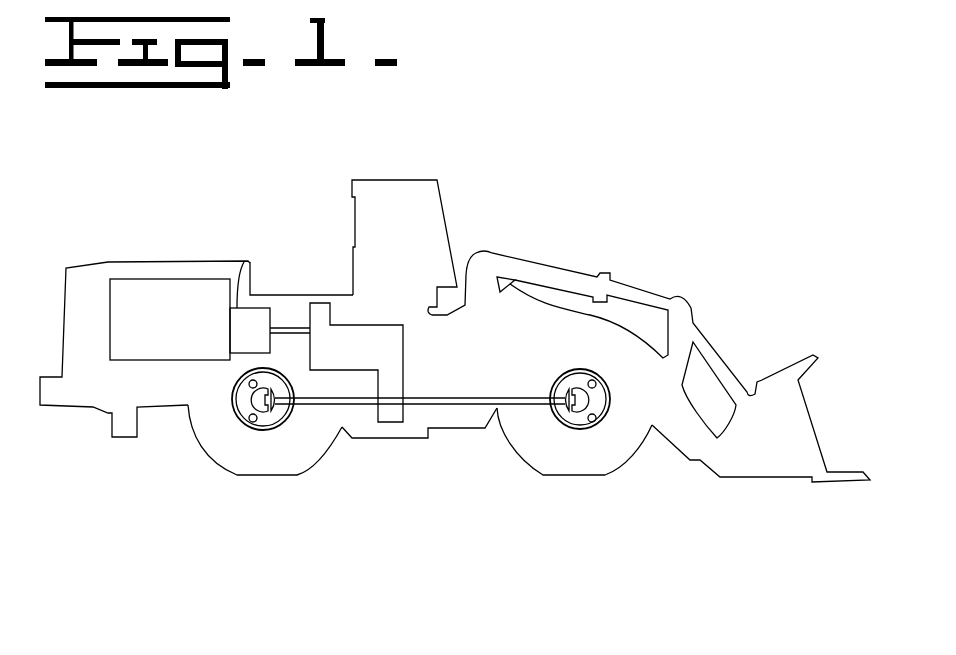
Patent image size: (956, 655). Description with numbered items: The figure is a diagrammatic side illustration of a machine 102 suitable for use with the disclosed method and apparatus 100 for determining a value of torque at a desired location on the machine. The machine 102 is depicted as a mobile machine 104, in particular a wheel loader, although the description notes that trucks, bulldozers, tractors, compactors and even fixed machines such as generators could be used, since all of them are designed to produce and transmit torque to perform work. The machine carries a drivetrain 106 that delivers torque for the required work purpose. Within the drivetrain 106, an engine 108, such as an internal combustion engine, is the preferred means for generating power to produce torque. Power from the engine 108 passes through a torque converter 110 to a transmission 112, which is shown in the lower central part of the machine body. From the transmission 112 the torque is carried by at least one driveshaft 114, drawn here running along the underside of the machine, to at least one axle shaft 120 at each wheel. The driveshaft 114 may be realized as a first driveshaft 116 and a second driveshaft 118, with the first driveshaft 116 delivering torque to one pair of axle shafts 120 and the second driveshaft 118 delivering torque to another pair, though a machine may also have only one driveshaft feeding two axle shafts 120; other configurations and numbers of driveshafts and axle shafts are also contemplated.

The method and apparatus 100 is at (128, 162).
The machine 102 is at (294, 195).
The mobile machine 104 is at (447, 227).
The drivetrain 106 is at (275, 266).
The engine 108 is at (189, 332).
The torque converter 110 is at (245, 261).
The transmission 112 is at (373, 360).
The driveshaft 114 is at (429, 471).
The first driveshaft 116 is at (458, 407).
The second driveshaft 118 is at (318, 405).
The axle shaft 120 is at (257, 403).